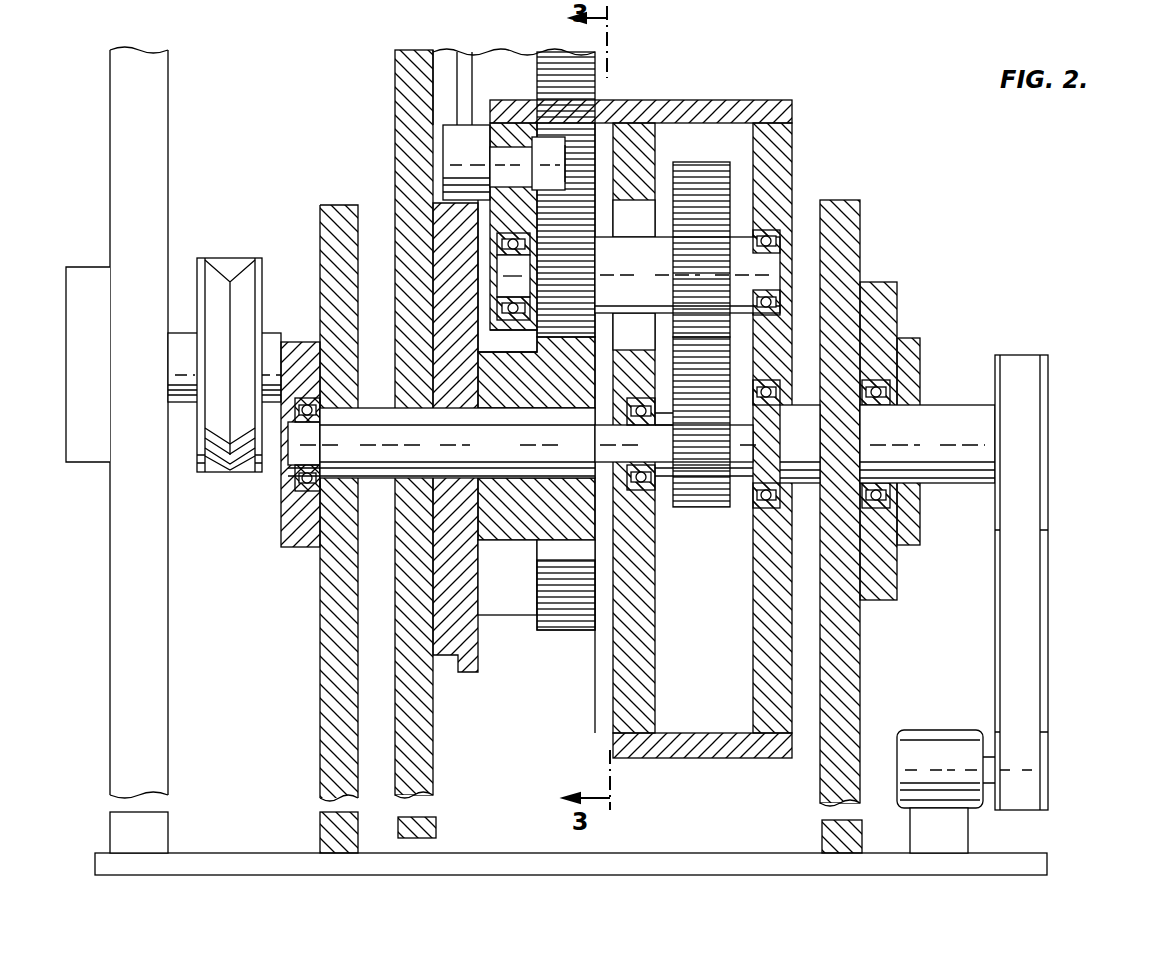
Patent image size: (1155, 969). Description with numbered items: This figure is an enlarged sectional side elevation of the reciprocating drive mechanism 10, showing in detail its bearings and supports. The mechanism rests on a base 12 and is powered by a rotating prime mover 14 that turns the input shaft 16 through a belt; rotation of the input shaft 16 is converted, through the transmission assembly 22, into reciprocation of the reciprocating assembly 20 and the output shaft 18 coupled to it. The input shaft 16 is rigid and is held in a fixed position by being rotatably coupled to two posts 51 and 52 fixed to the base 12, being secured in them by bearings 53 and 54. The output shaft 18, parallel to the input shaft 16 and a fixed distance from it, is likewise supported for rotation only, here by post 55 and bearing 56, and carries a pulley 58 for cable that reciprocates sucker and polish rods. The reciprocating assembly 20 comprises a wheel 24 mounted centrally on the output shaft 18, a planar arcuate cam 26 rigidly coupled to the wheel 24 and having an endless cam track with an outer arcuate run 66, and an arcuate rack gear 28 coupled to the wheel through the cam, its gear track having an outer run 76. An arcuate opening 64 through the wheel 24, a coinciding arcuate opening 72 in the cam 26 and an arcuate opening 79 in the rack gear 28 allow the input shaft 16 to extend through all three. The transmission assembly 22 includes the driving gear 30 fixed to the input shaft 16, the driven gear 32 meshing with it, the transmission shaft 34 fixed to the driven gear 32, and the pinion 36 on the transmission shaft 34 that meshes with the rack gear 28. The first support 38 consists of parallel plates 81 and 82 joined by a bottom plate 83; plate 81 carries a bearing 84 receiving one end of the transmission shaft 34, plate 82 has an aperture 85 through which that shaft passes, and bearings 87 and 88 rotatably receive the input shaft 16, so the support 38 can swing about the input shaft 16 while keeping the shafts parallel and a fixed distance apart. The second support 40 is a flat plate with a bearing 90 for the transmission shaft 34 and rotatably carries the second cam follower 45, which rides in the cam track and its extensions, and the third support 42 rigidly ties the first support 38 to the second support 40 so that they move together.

The reciprocating drive mechanism 10 is at (948, 176).
The base 12 is at (1054, 856).
The rotating prime mover 14 is at (933, 725).
The input shaft 16 is at (948, 492).
The output shaft 18 is at (185, 322).
The reciprocating assembly 20 is at (503, 419).
The transmission assembly 22 is at (699, 420).
The wheel 24 is at (395, 108).
The arcuate cam 26 is at (456, 42).
The arcuate rack gear 28 is at (597, 94).
The driving gear 30 is at (700, 508).
The driven gear 32 is at (715, 160).
The transmission shaft 34 is at (740, 232).
The pinion 36 is at (582, 210).
The first support 38 is at (702, 473).
The second support 40 is at (503, 116).
The third support 42 is at (712, 92).
The second cam follower 45 is at (443, 168).
The post 51 is at (860, 228).
The post 52 is at (320, 215).
The bearing 53 is at (878, 378).
The bearing 54 is at (281, 520).
The post 55 is at (110, 100).
The bearing 56 is at (90, 262).
The pulley 58 is at (216, 474).
The arcuate opening 64 is at (402, 478).
The outer arcuate run 66 is at (468, 673).
The arcuate opening 72 is at (455, 478).
The outer run 76 is at (558, 632).
The arcuate opening 79 is at (548, 478).
The plate 81 is at (755, 650).
The plate 82 is at (657, 650).
The bottom plate 83 is at (745, 758).
The bearing 84 is at (765, 230).
The aperture 85 is at (632, 203).
The bearing 87 is at (758, 500).
The bearing 88 is at (657, 492).
The bearing 90 is at (497, 262).